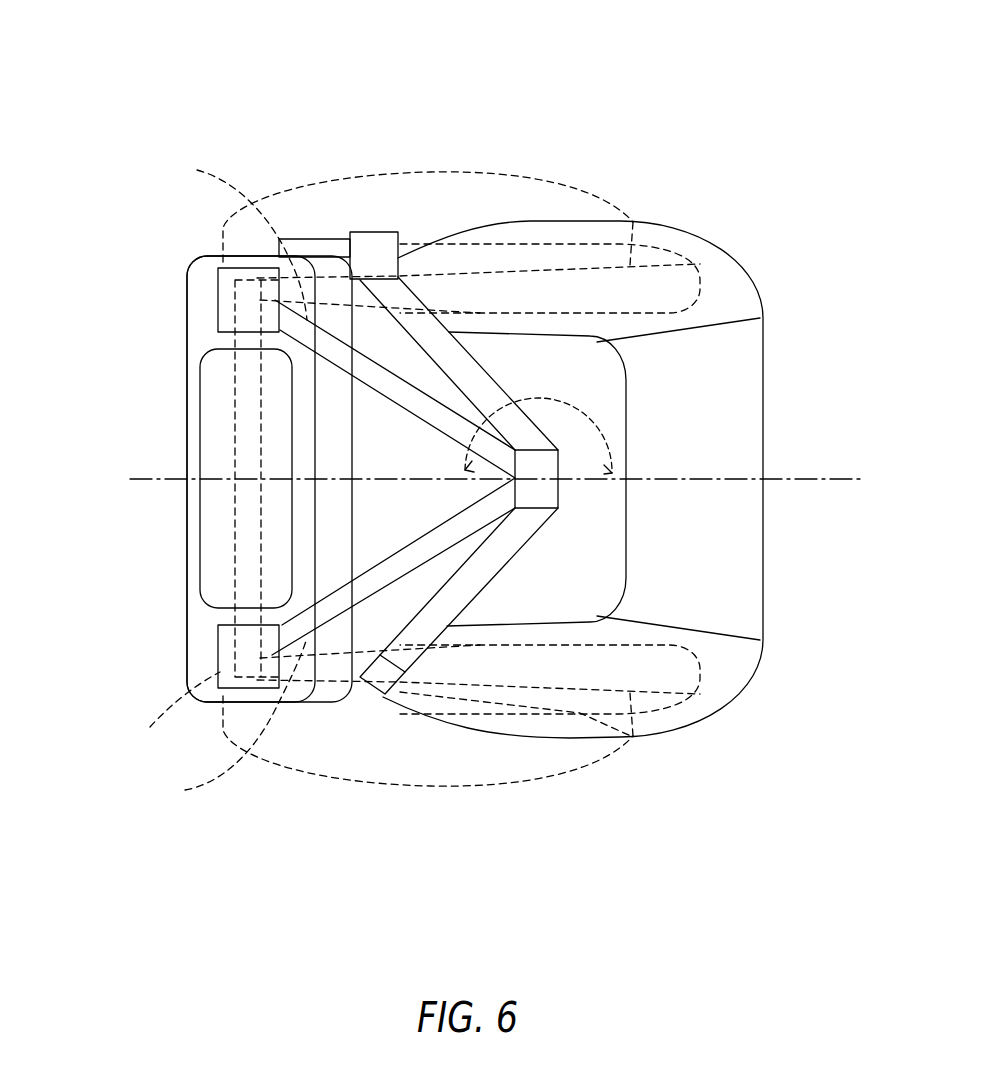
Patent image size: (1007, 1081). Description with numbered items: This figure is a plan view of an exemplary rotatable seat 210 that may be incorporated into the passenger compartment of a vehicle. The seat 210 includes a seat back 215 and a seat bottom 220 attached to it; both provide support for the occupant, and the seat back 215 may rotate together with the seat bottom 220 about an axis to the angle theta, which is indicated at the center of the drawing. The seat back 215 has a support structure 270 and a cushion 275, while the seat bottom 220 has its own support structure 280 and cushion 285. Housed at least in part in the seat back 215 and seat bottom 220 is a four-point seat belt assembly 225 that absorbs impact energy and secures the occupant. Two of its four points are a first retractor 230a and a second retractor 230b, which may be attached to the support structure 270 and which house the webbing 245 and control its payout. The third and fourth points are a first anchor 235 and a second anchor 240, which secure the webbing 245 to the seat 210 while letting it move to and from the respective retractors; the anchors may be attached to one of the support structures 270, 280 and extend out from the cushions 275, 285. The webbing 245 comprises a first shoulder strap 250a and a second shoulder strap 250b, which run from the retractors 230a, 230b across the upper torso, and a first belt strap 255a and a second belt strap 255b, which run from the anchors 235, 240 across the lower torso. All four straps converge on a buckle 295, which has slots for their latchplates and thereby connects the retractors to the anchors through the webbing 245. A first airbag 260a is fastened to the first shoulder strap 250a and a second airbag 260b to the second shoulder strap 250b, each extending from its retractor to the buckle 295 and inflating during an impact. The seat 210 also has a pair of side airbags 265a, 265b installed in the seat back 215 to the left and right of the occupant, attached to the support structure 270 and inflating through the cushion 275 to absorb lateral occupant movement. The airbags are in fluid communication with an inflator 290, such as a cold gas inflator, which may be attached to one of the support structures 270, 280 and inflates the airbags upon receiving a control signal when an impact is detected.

The rotatable seat 210 is at (472, 450).
The seat back 215 is at (189, 397).
The seat bottom 220 is at (765, 408).
The seat belt assembly 225 is at (248, 648).
The first retractor 230a is at (232, 278).
The second retractor 230b is at (205, 708).
The first anchor 235 is at (369, 232).
The second anchor 240 is at (372, 688).
The webbing 245 is at (480, 380).
The first shoulder strap 250a is at (337, 355).
The second shoulder strap 250b is at (337, 600).
The first belt strap 255a is at (413, 310).
The second belt strap 255b is at (413, 648).
The first airbag 260a is at (197, 170).
The second airbag 260b is at (218, 720).
The first side airbag 265a is at (437, 172).
The second side airbag 265b is at (437, 786).
The support structure 270 is at (216, 299).
The cushion 275 is at (190, 349).
The support structure 280 is at (700, 267).
The cushion 285 is at (637, 242).
The inflator 290 is at (333, 239).
The buckle 295 is at (545, 488).